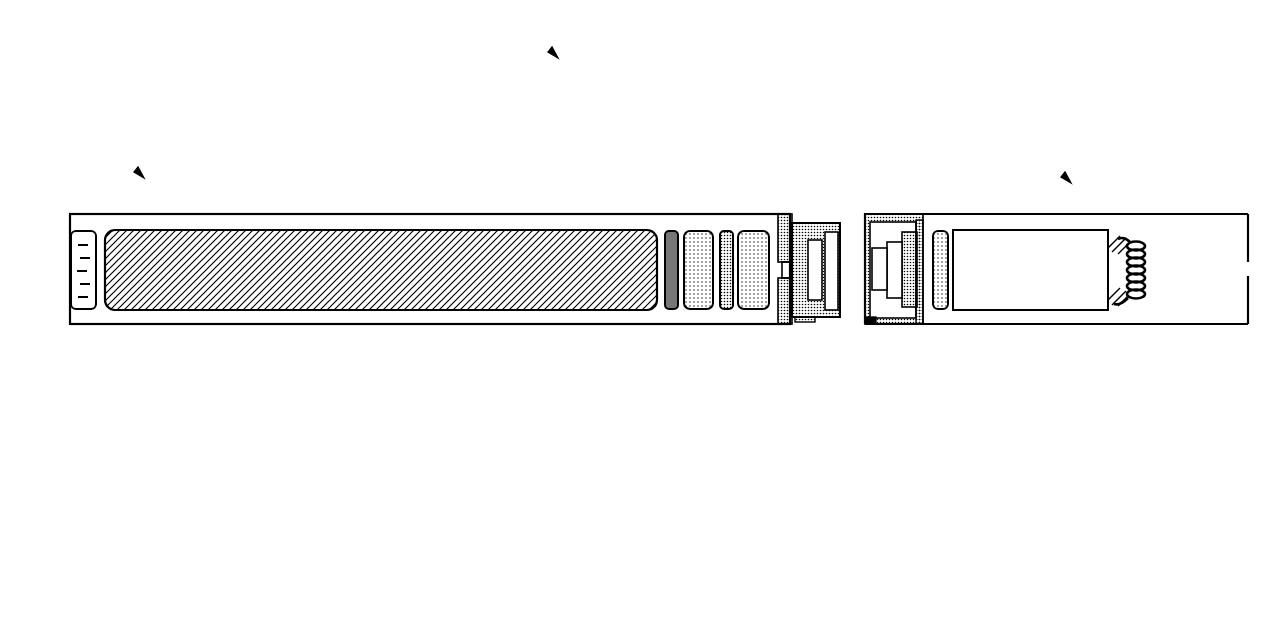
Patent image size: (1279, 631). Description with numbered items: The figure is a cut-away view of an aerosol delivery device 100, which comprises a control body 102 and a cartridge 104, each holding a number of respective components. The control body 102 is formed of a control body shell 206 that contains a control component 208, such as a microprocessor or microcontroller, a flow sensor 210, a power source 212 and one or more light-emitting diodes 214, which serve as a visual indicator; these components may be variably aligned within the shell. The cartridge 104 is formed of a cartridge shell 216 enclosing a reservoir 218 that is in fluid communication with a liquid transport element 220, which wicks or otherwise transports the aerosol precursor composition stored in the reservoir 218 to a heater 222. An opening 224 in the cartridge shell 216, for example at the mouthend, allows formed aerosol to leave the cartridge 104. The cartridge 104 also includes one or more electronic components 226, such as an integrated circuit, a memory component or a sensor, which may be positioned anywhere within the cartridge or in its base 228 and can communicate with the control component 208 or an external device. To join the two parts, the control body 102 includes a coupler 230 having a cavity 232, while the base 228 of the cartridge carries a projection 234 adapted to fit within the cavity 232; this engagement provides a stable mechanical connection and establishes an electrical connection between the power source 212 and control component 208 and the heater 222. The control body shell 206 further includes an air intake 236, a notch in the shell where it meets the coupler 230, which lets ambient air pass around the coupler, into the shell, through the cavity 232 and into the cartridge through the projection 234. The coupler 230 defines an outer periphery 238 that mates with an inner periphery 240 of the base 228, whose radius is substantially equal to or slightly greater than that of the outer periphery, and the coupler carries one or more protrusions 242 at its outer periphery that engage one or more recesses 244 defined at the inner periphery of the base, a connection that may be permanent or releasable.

The aerosol delivery device 100 is at (658, 275).
The control body 102 is at (471, 267).
The cartridge 104 is at (1042, 277).
The control body shell 206 is at (430, 294).
The control component 208 is at (690, 302).
The flow sensor 210 is at (735, 302).
The power source 212 is at (381, 302).
The light-emitting diode 214 is at (103, 302).
The cartridge shell 216 is at (1056, 310).
The reservoir 218 is at (1030, 296).
The liquid transport element 220 is at (1150, 308).
The heater 222 is at (1178, 301).
The opening 224 is at (1208, 247).
The electronic components 226 is at (963, 296).
The base 228 is at (945, 306).
The coupler 230 is at (817, 275).
The cavity 232 is at (791, 221).
The projection 234 is at (911, 235).
The air intake 236 is at (761, 248).
The outer periphery 238 is at (845, 241).
The inner periphery 240 is at (877, 222).
The protrusions 242 is at (826, 362).
The recesses 244 is at (906, 281).